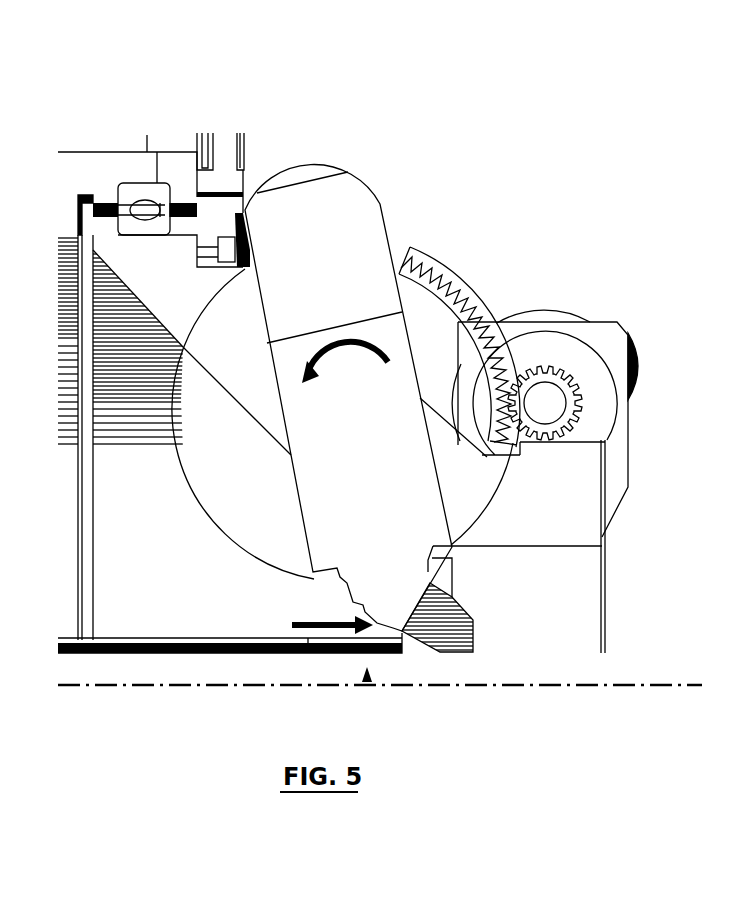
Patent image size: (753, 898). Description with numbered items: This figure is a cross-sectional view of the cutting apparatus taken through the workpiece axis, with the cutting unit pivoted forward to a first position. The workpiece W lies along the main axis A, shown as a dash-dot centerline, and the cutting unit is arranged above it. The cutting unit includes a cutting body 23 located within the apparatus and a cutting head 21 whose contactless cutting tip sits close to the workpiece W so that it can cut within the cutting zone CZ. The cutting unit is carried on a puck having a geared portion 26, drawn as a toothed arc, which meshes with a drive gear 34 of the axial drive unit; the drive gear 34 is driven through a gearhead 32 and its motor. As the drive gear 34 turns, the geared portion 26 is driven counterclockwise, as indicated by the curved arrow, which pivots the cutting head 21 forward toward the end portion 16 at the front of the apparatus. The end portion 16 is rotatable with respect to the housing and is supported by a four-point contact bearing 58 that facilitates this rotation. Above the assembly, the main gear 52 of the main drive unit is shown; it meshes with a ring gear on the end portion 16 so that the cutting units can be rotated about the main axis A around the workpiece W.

The end portion 16 is at (607, 537).
The cutting head 21 is at (412, 627).
The cutting body 23 is at (366, 454).
The geared portion 26 is at (447, 283).
The gearhead 32 is at (642, 380).
The drive gear 34 is at (577, 383).
The main gear 52 is at (237, 176).
The four-point contact bearing 58 is at (150, 193).
The workpiece W is at (183, 640).
The main axis A is at (547, 688).
The cutting zone CZ is at (367, 680).